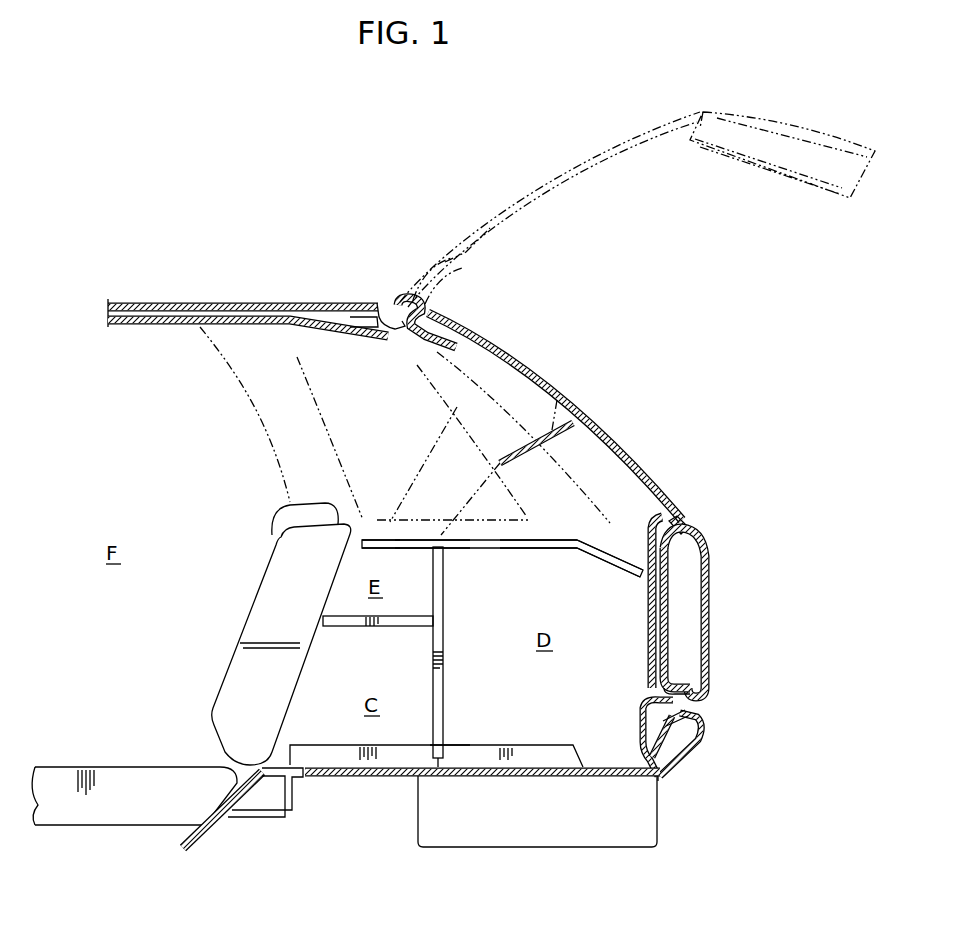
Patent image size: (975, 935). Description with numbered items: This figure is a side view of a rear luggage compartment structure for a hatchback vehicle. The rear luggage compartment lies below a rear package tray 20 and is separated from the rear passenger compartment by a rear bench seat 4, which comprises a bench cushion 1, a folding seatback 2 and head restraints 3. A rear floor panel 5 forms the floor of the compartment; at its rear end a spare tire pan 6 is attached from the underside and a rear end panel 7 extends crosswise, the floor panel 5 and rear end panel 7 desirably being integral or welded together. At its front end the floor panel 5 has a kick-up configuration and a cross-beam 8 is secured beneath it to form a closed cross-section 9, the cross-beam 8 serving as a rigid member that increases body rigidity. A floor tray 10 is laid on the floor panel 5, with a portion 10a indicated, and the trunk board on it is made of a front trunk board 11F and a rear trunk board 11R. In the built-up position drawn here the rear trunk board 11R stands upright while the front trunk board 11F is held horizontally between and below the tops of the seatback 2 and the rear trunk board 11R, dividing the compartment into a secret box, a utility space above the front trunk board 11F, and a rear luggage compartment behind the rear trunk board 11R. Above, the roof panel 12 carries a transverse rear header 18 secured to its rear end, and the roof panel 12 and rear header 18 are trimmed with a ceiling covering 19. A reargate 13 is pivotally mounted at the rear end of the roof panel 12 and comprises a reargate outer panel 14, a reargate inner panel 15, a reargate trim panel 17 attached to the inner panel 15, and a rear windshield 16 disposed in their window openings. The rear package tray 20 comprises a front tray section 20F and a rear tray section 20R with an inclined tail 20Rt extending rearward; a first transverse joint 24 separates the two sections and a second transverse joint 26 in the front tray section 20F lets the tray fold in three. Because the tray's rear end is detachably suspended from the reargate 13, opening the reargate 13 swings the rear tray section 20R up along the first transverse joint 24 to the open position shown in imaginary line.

The bench cushion 1 is at (109, 826).
The seatback 2 is at (248, 617).
The head restraints 3 is at (273, 513).
The rear bench seat 4 is at (178, 691).
The rear floor panel 5 is at (372, 778).
The spare tire pan 6 is at (568, 847).
The rear end panel 7 is at (680, 765).
The cross-beam 8 is at (290, 804).
The closed cross-section 9 is at (257, 806).
The floor tray 10 is at (580, 745).
The floor trim portion 10a is at (450, 747).
The front trunk board 11F is at (338, 628).
The rear trunk board 11R is at (443, 690).
The roof panel 12 is at (181, 303).
The reargate 13 is at (690, 514).
The reargate outer panel 14 is at (710, 568).
The reargate inner panel 15 is at (622, 650).
The rear windshield 16 is at (622, 447).
The reargate trim panel 17 is at (647, 643).
The rear header 18 is at (338, 304).
The ceiling covering 19 is at (179, 325).
The rear package tray 20 is at (558, 400).
The front tray section 20F is at (374, 535).
The rear tray section 20R is at (531, 540).
The inclined tail 20Rt is at (601, 562).
The first transverse joint 24 is at (444, 538).
The second transverse joint 26 is at (402, 540).